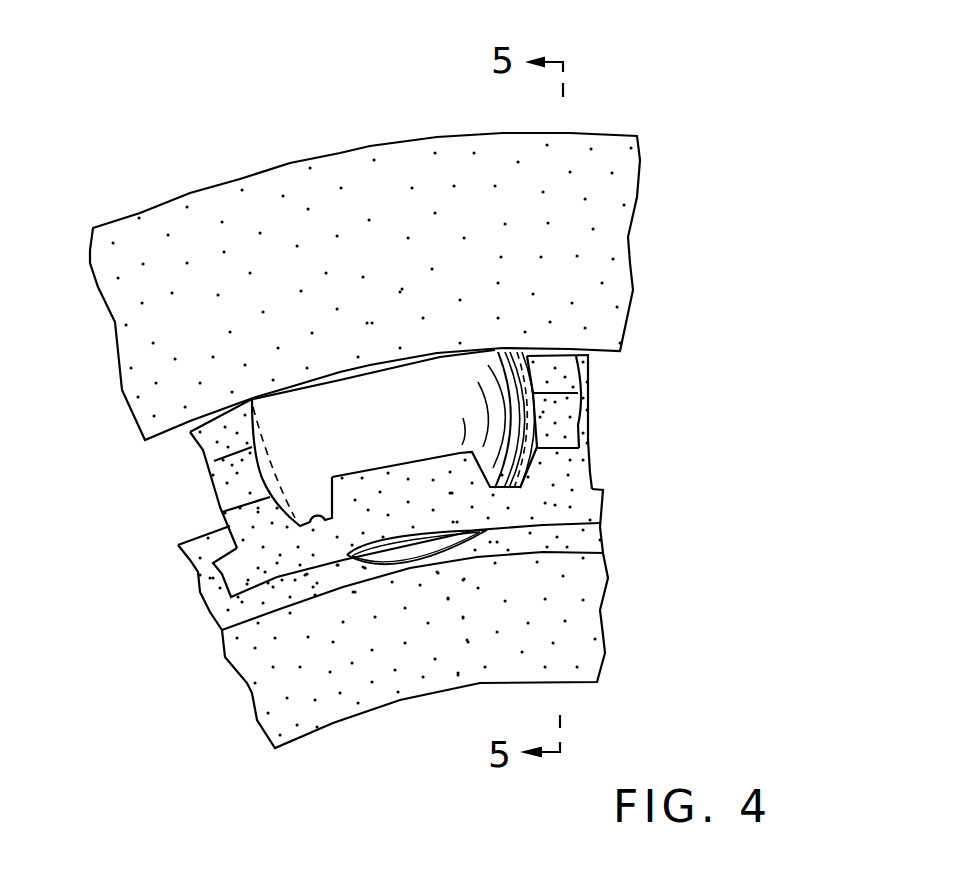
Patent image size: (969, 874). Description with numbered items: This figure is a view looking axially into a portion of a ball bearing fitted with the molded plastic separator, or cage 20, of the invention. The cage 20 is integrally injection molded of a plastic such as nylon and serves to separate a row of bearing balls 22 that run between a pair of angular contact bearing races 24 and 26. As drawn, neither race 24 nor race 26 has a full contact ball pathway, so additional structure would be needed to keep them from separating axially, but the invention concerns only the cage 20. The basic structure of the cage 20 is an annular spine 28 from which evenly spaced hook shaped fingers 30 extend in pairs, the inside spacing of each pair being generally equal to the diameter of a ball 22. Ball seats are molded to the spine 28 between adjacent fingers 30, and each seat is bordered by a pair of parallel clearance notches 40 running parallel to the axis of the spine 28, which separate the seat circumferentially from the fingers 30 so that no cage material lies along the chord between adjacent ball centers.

The cage 20 is at (625, 489).
The bearing balls 22 is at (305, 455).
The angular contact bearing race 24 is at (632, 239).
The angular contact bearing race 26 is at (601, 609).
The annular spine 28 is at (236, 575).
The hook shaped fingers 30 is at (219, 410).
The clearance notches 40 is at (324, 520).